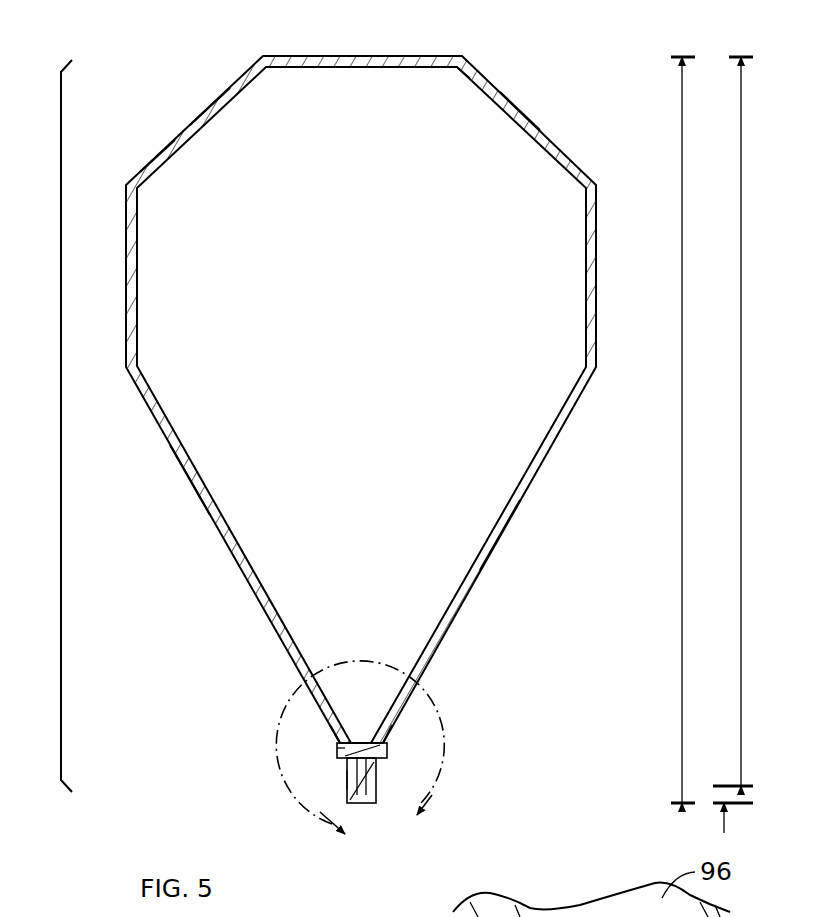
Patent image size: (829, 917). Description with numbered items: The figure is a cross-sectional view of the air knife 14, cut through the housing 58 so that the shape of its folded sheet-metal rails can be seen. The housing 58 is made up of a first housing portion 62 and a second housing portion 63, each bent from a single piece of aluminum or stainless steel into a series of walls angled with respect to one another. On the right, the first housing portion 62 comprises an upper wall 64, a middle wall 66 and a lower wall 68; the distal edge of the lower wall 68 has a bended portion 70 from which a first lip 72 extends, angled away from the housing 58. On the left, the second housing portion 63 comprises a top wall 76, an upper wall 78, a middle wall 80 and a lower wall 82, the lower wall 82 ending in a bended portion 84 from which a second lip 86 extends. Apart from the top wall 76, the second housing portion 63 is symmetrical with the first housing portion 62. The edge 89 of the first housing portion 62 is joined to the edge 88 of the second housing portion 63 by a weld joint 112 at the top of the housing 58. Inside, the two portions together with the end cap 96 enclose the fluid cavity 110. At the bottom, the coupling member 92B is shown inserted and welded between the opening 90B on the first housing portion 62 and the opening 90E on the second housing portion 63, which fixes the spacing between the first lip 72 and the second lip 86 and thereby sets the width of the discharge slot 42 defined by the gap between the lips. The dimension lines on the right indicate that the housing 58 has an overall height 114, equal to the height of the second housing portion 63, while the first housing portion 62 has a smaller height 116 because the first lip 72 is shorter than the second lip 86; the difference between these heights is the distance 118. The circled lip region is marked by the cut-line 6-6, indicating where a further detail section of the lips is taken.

The air knife 14 is at (143, 50).
The housing 58 is at (60, 426).
The first housing portion 62 is at (600, 215).
The second housing portion 63 is at (150, 150).
The upper wall 64 is at (528, 118).
The middle wall 66 is at (596, 285).
The lower wall 68 is at (495, 543).
The bended portion 70 is at (400, 750).
The first lip 72 is at (378, 775).
The top wall 76 is at (330, 55).
The upper wall 78 is at (207, 105).
The middle wall 80 is at (127, 245).
The lower wall 82 is at (190, 483).
The bended portion 84 is at (322, 745).
The second lip 86 is at (350, 778).
The edge 88 is at (454, 77).
The edge 89 is at (463, 73).
The opening 90B is at (385, 740).
The opening 90E is at (341, 735).
The coupling member 92B is at (368, 741).
The end cap 96 is at (190, 277).
The fluid cavity 110 is at (383, 218).
The weld joint 112 is at (463, 56).
The overall height 114 is at (682, 432).
The height of the first housing portion 116 is at (760, 421).
The height difference distance 118 is at (724, 784).
The discharge slot 42 is at (366, 802).
The cut-line 6- 6 is at (360, 763).